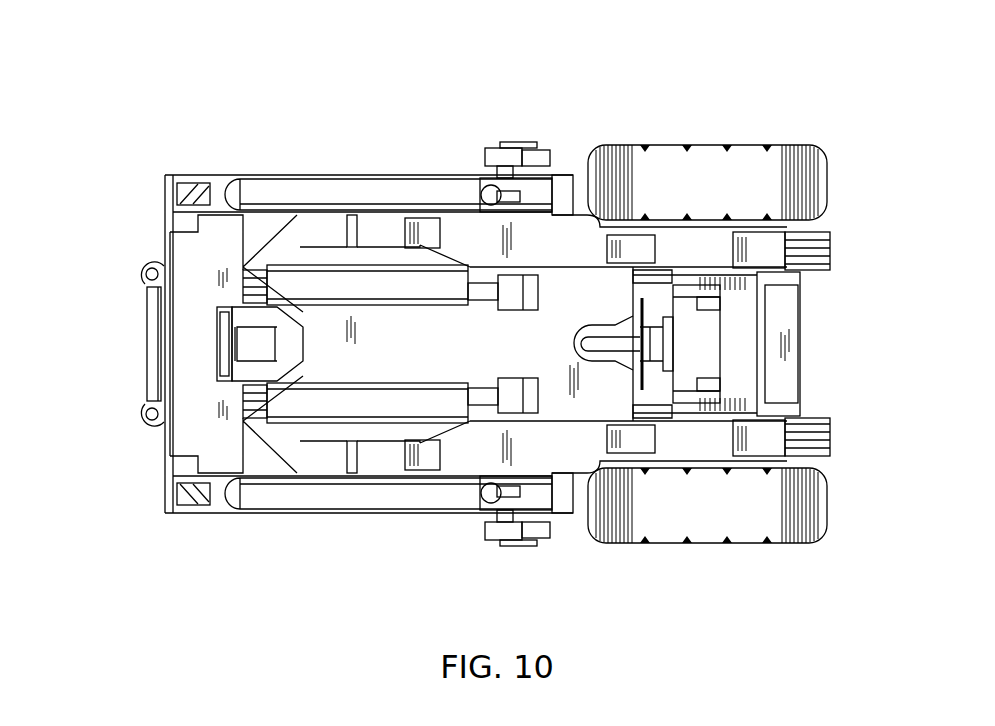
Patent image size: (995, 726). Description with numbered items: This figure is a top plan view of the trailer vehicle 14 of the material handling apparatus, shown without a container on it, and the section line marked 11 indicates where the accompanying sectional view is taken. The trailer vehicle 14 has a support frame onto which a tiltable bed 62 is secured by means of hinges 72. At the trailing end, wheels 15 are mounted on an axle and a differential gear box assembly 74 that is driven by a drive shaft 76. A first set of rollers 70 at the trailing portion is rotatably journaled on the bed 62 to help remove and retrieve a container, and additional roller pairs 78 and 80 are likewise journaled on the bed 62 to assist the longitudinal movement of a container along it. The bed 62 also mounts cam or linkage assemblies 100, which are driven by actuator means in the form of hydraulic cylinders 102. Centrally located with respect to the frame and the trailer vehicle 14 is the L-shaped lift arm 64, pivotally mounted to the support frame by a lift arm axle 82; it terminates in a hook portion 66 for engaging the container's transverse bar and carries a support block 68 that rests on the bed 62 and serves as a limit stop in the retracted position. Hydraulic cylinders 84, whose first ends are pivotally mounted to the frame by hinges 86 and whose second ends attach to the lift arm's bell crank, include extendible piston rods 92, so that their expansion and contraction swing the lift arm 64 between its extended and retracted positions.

The section line 11- 11 is at (62, 411).
The trailer vehicle 14 is at (607, 101).
The wheels 15 is at (808, 172).
The tiltable bed 62 is at (543, 237).
The lift arm 64 is at (421, 356).
The hook portion 66 is at (243, 323).
The support block 68 is at (228, 350).
The first set of rollers 70 is at (757, 247).
The hinges 72 is at (830, 240).
The differential gear box assembly 74 is at (692, 342).
The drive shaft 76 is at (610, 340).
The roller pairs 78 is at (630, 236).
The roller pairs 80 is at (425, 228).
The lift arm axle 82 is at (530, 297).
The hydraulic cylinders 84 is at (348, 283).
The hinges 86 is at (190, 195).
The piston rods 92 is at (500, 395).
The cam assemblies 100 is at (519, 118).
The hydraulic cylinders 102 is at (357, 193).